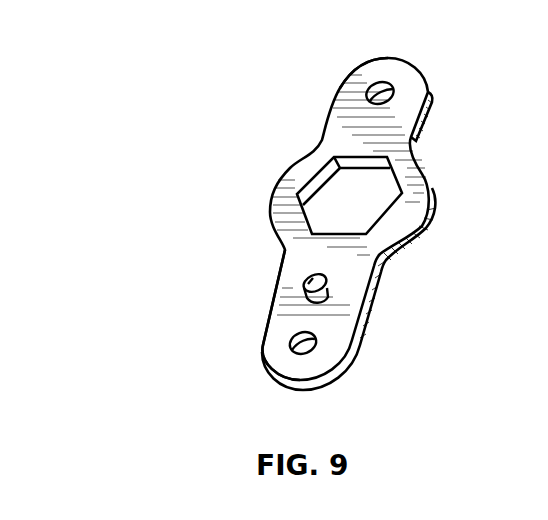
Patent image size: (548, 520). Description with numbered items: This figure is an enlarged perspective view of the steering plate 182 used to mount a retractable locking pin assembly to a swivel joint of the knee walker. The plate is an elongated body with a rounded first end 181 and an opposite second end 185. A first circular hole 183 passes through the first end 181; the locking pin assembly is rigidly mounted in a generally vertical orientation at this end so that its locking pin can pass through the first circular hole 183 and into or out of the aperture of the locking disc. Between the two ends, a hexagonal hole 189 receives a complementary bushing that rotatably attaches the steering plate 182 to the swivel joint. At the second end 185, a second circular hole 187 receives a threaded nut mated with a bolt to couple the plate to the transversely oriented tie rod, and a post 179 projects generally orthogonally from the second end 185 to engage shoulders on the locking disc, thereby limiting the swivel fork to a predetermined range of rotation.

The steering plate 182 is at (207, 91).
The first end 181 is at (341, 90).
The first circular hole 183 is at (380, 91).
The hexagonal hole 189 is at (322, 173).
The post 179 is at (311, 282).
The second circular hole 187 is at (302, 340).
The second end 185 is at (262, 350).